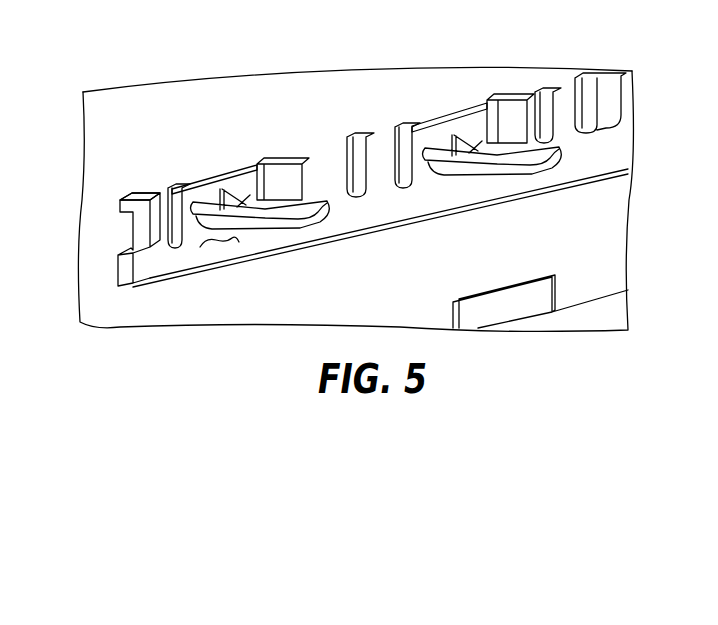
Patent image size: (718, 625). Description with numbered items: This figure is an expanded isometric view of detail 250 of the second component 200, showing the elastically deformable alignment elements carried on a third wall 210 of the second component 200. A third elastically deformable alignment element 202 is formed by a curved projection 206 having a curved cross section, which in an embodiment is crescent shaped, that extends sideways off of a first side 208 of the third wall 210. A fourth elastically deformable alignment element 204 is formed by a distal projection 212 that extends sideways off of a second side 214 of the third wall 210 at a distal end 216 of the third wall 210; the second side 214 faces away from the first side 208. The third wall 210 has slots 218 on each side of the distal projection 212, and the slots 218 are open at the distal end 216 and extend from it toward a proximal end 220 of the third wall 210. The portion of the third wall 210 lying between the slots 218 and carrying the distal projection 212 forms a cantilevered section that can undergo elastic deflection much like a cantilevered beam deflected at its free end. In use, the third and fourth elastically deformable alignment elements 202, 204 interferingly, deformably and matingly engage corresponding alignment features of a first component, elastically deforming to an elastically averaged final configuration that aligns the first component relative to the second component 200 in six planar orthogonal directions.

The second component 200 is at (587, 205).
The third elastically deformable alignment element 202 is at (547, 173).
The fourth elastically deformable alignment element 204 is at (355, 128).
The curved projection 206 is at (196, 203).
The first side 208 is at (220, 245).
The third wall 210 is at (132, 230).
The distal projection 212 is at (120, 201).
The second side 214 is at (433, 112).
The distal end 216 is at (185, 182).
The slots 218 is at (410, 188).
The proximal end 220 is at (177, 284).
The detail 250 is at (340, 70).